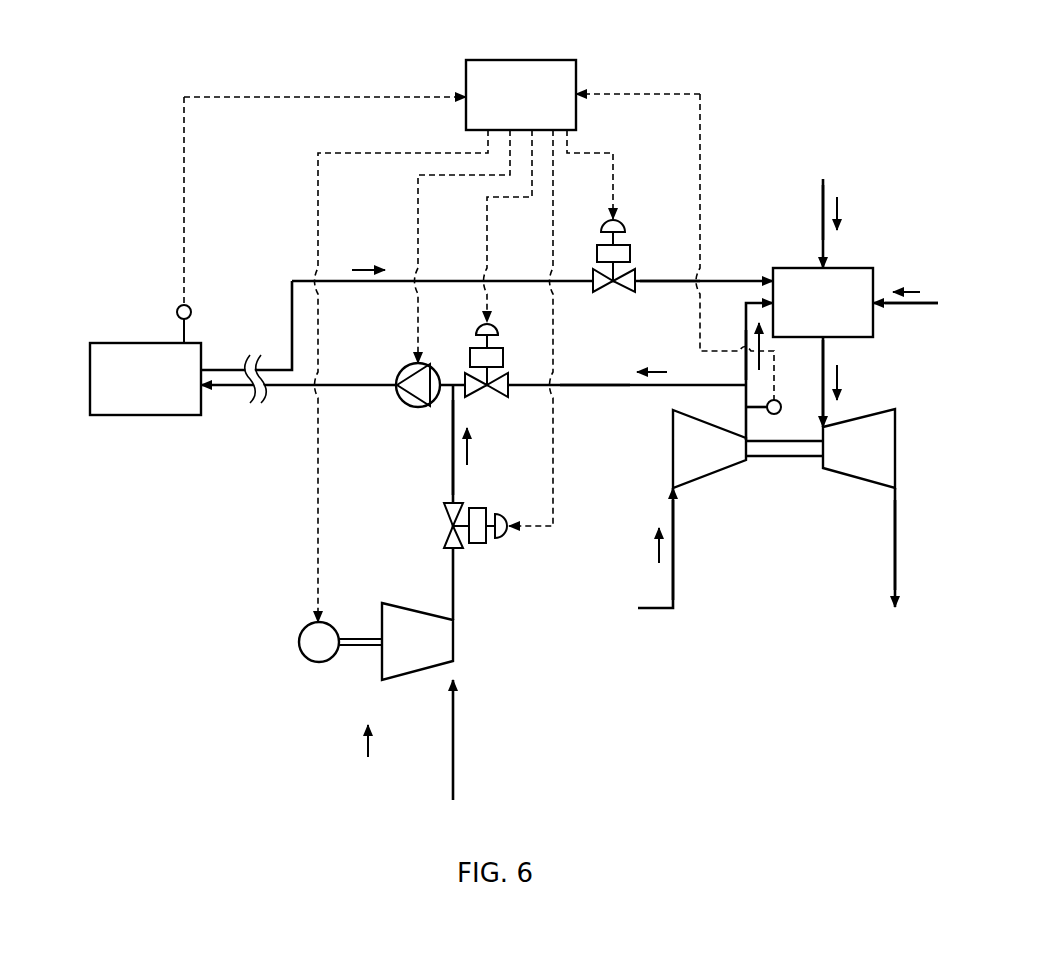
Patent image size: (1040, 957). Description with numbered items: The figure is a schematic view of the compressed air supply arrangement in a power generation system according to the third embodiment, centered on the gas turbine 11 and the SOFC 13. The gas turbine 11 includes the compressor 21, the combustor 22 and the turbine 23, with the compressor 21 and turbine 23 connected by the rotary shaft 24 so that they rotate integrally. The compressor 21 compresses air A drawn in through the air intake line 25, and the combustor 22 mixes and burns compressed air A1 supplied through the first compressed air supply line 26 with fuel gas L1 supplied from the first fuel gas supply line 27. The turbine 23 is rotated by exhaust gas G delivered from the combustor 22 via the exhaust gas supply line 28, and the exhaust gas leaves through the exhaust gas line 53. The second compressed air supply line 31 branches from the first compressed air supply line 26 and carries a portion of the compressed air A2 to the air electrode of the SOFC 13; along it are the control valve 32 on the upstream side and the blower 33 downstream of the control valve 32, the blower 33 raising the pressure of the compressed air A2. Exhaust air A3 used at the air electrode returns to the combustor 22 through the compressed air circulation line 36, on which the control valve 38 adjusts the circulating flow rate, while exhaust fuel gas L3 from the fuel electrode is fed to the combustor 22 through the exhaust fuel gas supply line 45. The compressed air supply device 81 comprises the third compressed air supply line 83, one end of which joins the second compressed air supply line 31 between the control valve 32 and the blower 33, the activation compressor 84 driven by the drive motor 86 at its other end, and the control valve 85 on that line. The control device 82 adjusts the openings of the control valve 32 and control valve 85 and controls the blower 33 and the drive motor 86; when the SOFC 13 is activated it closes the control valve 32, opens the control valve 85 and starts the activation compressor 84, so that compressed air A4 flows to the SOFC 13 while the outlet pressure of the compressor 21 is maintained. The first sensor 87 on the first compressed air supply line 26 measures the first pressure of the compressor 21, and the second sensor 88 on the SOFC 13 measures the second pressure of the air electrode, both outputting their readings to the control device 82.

The gas turbine 11 is at (912, 406).
The SOFC 13 is at (106, 325).
The compressor 21 is at (718, 481).
The combustor 22 is at (842, 268).
The turbine 23 is at (841, 481).
The rotary shaft 24 is at (780, 460).
The air intake line 25 is at (674, 578).
The first compressed air supply line 26 is at (742, 328).
The first fuel gas supply line 27 is at (896, 313).
The exhaust gas supply line 28 is at (829, 356).
The second compressed air supply line 31 is at (603, 379).
The control valve 32 is at (497, 328).
The blower 33 is at (406, 362).
The compressed air circulation line 36 is at (660, 277).
The control valve 38 is at (622, 224).
The exhaust fuel gas supply line 45 is at (822, 203).
The exhaust gas line 53 is at (896, 578).
The compressed air supply device 81 is at (341, 699).
The control device 82 is at (517, 62).
The third compressed air supply line 83 is at (451, 449).
The activation compressor 84 is at (432, 670).
The control valve 85 is at (504, 536).
The drive motor 86 is at (307, 626).
The first sensor 87 is at (781, 404).
The second sensor 88 is at (191, 306).
The air A is at (656, 553).
The compressed air A1 is at (768, 350).
The compressed air A2 is at (653, 372).
The exhaust air A3 is at (367, 270).
The compressed air A4 is at (468, 452).
The fuel gas L1 is at (905, 292).
The exhaust fuel gas L3 is at (840, 212).
The exhaust gas G is at (844, 386).